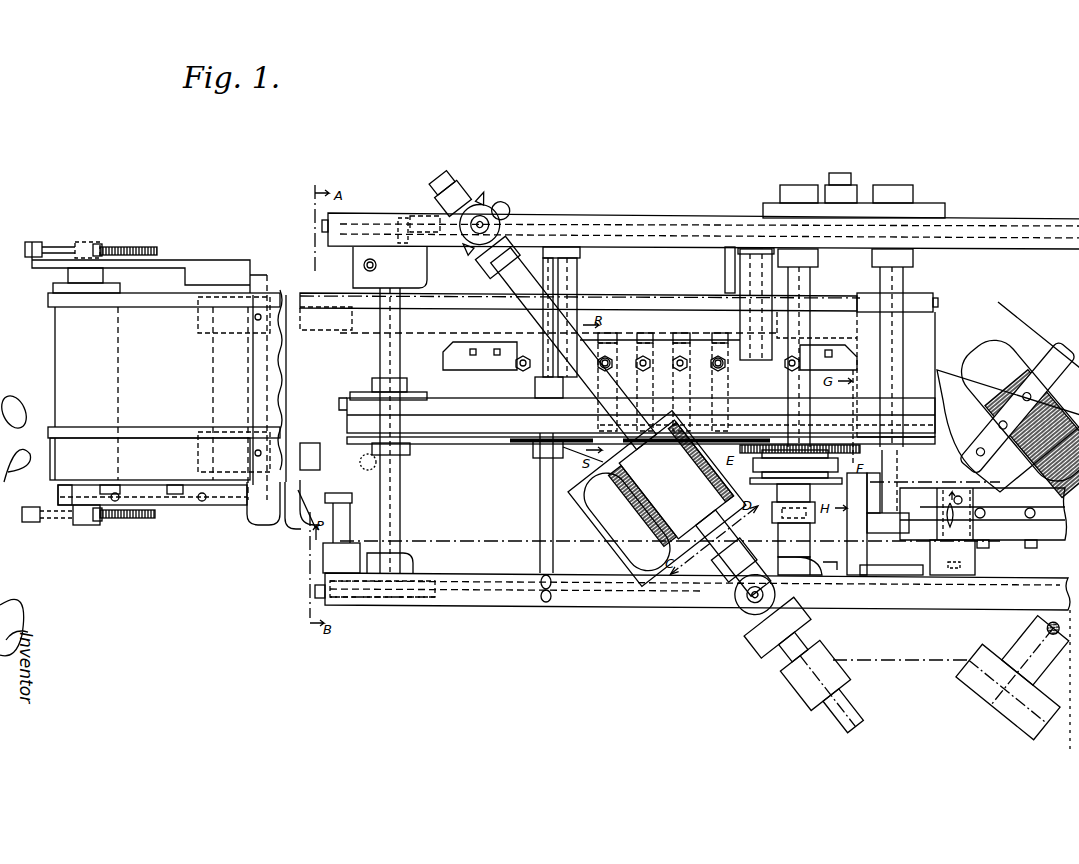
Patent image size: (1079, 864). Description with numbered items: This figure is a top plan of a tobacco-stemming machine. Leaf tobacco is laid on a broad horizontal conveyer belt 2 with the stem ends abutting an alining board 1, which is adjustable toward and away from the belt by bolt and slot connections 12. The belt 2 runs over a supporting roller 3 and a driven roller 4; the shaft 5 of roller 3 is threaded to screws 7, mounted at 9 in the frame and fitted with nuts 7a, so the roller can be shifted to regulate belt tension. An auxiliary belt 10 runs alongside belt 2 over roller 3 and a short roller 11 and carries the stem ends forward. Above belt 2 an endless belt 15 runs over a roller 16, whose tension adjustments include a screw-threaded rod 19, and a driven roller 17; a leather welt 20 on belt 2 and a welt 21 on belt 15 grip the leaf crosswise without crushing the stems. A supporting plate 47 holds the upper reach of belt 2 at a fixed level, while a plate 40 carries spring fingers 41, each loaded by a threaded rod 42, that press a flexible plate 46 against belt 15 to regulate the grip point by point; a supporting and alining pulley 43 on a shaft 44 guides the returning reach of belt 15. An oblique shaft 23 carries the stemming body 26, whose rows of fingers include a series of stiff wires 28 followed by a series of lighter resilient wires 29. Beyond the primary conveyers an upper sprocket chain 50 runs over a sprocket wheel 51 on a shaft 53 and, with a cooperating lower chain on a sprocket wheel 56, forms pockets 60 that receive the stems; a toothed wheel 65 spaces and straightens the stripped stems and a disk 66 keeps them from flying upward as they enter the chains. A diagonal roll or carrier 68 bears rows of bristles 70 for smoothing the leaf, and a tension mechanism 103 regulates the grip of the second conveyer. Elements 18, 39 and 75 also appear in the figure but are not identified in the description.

The alining board 1 is at (170, 494).
The conveyer belt 2 is at (55, 372).
The supporting roller 3 is at (120, 291).
The driving roller 4 is at (925, 300).
The shaft 5 is at (87, 242).
The screws 7 is at (142, 247).
The nuts 7a is at (101, 244).
The frame mounting 9 is at (40, 242).
The auxiliary belt 10 is at (50, 461).
The short roller 11 is at (300, 524).
The bolt and slot connections 12 is at (116, 505).
The endless belt 15 is at (477, 405).
The supporting roller 16 is at (407, 392).
The driving roller 17 is at (975, 455).
The crank head 18 is at (418, 214).
The screw-threaded rod 19 is at (420, 600).
The strip or welt 20 is at (148, 430).
The strip or welt 21 is at (345, 412).
The shaft 23 is at (722, 553).
The stemming body 26 is at (672, 478).
The series of stiff fingers 28 is at (648, 498).
The series of resilient fingers 29 is at (712, 466).
The plate 39 is at (627, 582).
The plate 40 is at (662, 340).
The spring fingers 41 is at (695, 355).
The tensioning rods 42 is at (607, 357).
The supporting and alining pulley 43 is at (510, 447).
The shaft 44 is at (540, 484).
The flexible plate 46 is at (668, 415).
The supporting plate 47 is at (318, 293).
The upper sprocket chain 50 is at (870, 482).
The sprocket wheel 51 is at (810, 515).
The shaft 53 is at (810, 327).
The sprocket wheel 56 is at (796, 497).
The pockets 60 is at (758, 464).
The toothed wheel 65 is at (862, 452).
The disk or collar 66 is at (838, 445).
The roll or carrier 68 is at (1028, 375).
The bristles 70 is at (1000, 388).
The magnet holder plate 75 is at (985, 352).
The tension mechanism 103 is at (1035, 548).